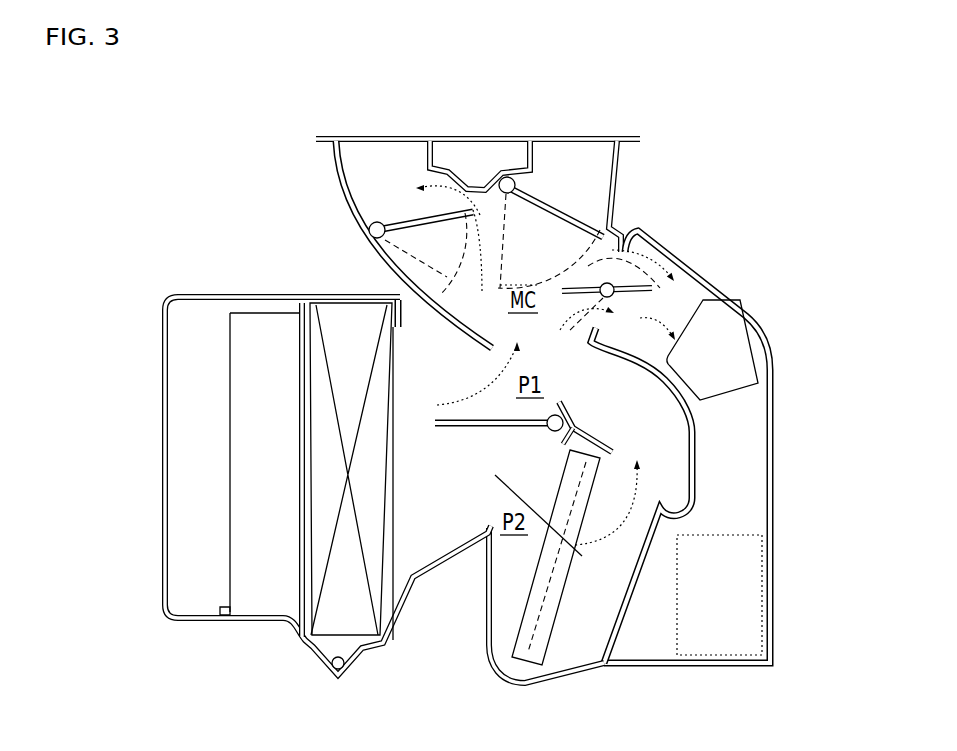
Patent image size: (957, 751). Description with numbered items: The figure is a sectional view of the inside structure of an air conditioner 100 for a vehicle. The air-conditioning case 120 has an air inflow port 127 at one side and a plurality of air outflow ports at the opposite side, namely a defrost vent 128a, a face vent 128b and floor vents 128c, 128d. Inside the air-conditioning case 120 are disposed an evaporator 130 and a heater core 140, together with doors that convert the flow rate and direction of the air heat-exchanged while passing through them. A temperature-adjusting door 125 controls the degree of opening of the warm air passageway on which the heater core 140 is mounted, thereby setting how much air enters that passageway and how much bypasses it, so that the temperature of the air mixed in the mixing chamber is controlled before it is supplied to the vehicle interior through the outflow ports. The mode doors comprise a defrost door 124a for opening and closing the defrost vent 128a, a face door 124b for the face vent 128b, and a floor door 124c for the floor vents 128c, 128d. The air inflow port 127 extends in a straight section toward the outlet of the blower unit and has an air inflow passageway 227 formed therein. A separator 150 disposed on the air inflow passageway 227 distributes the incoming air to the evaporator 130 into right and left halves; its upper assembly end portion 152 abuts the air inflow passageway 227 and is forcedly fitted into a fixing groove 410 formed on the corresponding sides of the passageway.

The air conditioner 100 is at (779, 301).
The air-conditioning case 120 is at (785, 506).
The defrost door 124a is at (370, 226).
The face door 124b is at (613, 207).
The floor door 124c is at (657, 288).
The temperature-adjusting door 125 is at (467, 430).
The air inflow port 127 is at (158, 293).
The defrost vent 128a is at (383, 172).
The face vent 128b is at (567, 172).
The floor vent 128c is at (736, 395).
The floor vent 128d is at (742, 601).
The evaporator 130 is at (335, 622).
The heater core 140 is at (530, 650).
The separator 150 is at (227, 380).
The assembly end portion 152 is at (228, 336).
The air inflow passageway 227 is at (209, 496).
The fixing groove 410 is at (267, 312).